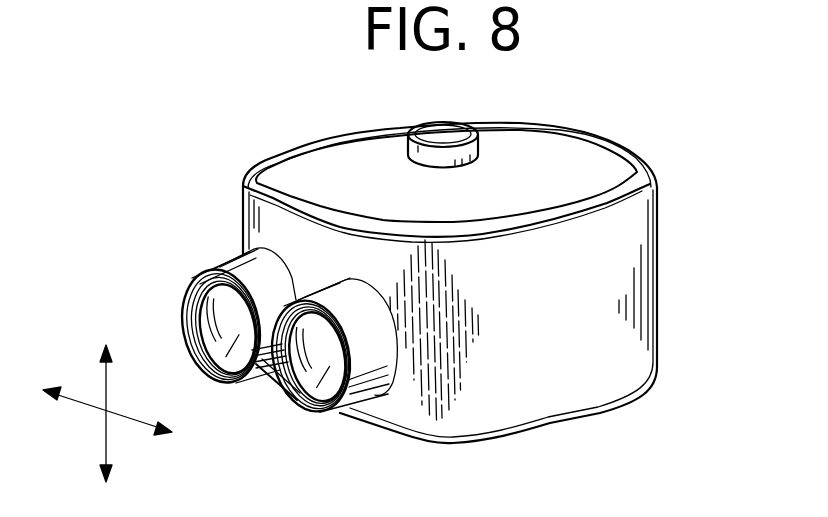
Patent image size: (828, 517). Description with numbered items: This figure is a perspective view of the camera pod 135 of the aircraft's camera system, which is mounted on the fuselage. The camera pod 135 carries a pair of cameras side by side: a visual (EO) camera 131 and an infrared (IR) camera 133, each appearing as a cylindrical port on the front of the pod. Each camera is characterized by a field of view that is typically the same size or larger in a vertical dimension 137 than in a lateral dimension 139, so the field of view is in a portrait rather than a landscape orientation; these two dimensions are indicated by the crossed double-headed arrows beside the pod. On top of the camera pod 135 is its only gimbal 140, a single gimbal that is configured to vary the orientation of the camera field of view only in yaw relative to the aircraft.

The visual (EO) camera 131 is at (306, 405).
The infrared (IR) camera 133 is at (218, 380).
The camera pod 135 is at (649, 287).
The vertical dimension 137 is at (108, 433).
The lateral dimension 139 is at (127, 418).
The gimbal 140 is at (407, 150).